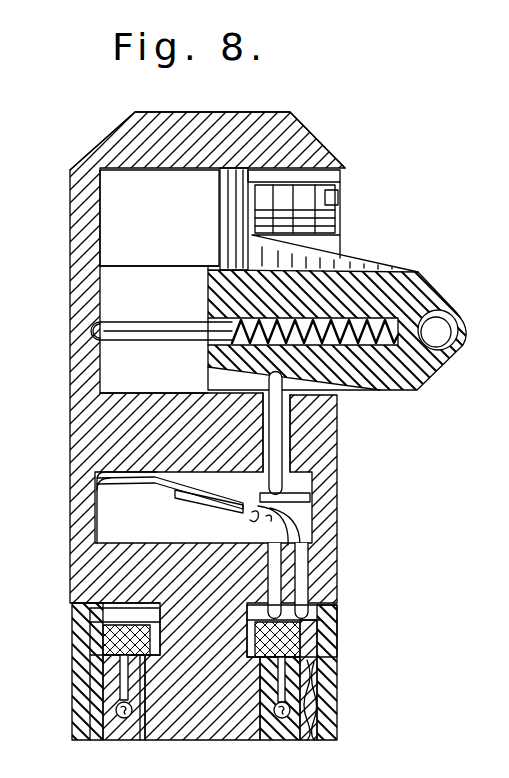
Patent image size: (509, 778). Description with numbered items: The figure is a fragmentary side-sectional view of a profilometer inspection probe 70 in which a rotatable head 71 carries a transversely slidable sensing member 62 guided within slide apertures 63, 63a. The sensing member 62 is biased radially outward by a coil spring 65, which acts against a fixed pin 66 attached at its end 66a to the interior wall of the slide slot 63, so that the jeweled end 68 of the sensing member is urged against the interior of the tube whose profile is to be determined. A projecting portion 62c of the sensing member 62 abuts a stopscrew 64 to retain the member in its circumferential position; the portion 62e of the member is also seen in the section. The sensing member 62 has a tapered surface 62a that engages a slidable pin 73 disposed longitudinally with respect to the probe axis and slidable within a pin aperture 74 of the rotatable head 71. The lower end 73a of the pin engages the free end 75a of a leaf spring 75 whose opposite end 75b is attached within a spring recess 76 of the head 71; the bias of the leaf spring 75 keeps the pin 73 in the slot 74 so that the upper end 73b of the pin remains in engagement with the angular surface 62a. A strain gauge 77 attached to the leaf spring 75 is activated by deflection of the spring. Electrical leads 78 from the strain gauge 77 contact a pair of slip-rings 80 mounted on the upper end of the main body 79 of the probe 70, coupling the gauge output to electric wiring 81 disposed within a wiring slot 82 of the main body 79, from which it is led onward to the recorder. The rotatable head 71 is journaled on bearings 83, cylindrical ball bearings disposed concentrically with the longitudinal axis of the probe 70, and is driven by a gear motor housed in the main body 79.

The profilometer probe 70 is at (353, 508).
The rotatable head 71 is at (305, 147).
The slide aperture 63a is at (120, 212).
The slide slot 63 is at (112, 278).
The projecting portion 62c is at (232, 217).
The stopscrew 64 is at (326, 196).
The sensing member 62 is at (405, 292).
The upper portion of sensing member 62e is at (254, 294).
The coil spring 65 is at (383, 307).
The tapered surface 62a is at (338, 374).
The upper end of pin 73b is at (212, 364).
The jeweled end 68 is at (452, 326).
The fixed pin 66 is at (122, 326).
The end of fixed pin 66a is at (93, 334).
The slidable pin 73 is at (277, 428).
The pin aperture 74 is at (292, 410).
The lower end of pin 73a is at (285, 483).
The spring recess 76 is at (143, 523).
The leaf spring 75 is at (220, 488).
The opposite end of leaf spring 75b is at (108, 480).
The strain gauge 77 is at (195, 500).
The free end of leaf spring 75a is at (317, 513).
The electrical leads 78 is at (298, 549).
The main body 79 is at (357, 659).
The slip-rings 80 is at (338, 618).
The electrical leads 81 is at (312, 675).
The wiring slot 82 is at (325, 702).
The bearings 83 is at (118, 706).